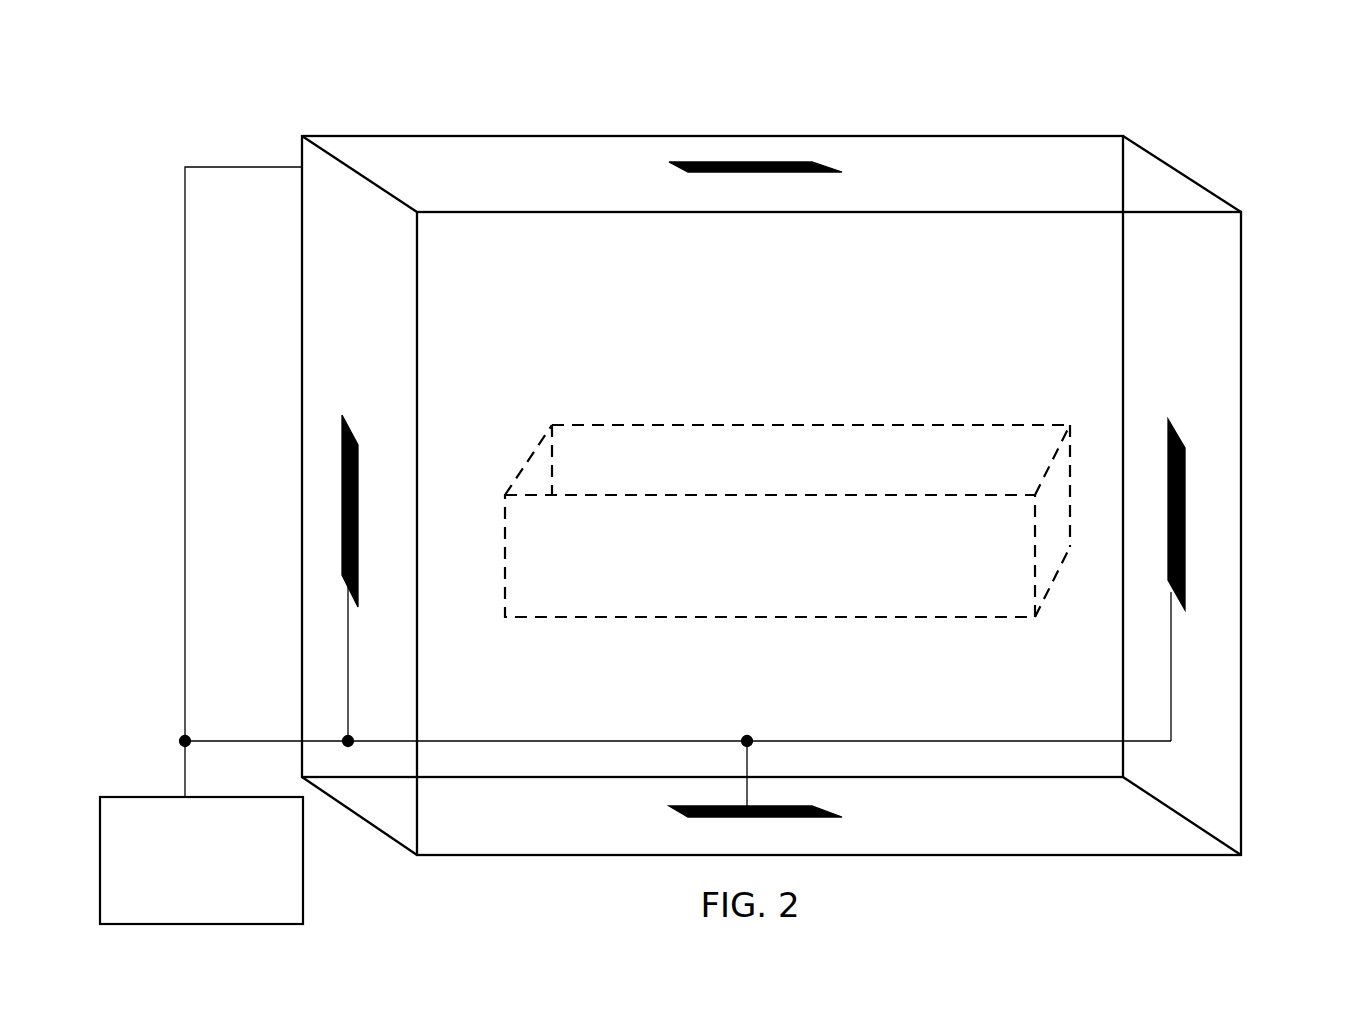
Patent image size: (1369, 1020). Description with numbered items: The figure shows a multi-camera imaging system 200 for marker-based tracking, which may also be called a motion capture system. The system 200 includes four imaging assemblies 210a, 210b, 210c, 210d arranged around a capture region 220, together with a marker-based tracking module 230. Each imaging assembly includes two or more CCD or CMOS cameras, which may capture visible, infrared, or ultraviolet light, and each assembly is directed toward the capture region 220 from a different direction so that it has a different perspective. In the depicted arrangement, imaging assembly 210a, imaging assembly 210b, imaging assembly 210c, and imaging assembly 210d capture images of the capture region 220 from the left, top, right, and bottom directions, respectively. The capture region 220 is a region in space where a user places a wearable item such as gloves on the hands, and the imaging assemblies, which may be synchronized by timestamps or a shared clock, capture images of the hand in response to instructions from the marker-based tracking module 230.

The multi-camera imaging system 200 is at (699, 463).
The imaging assembly 210a is at (342, 515).
The imaging assembly 210b is at (723, 162).
The imaging assembly 210c is at (1185, 545).
The imaging assembly 210d is at (828, 813).
The capture region 220 is at (943, 617).
The marker-based tracking module 230 is at (201, 860).